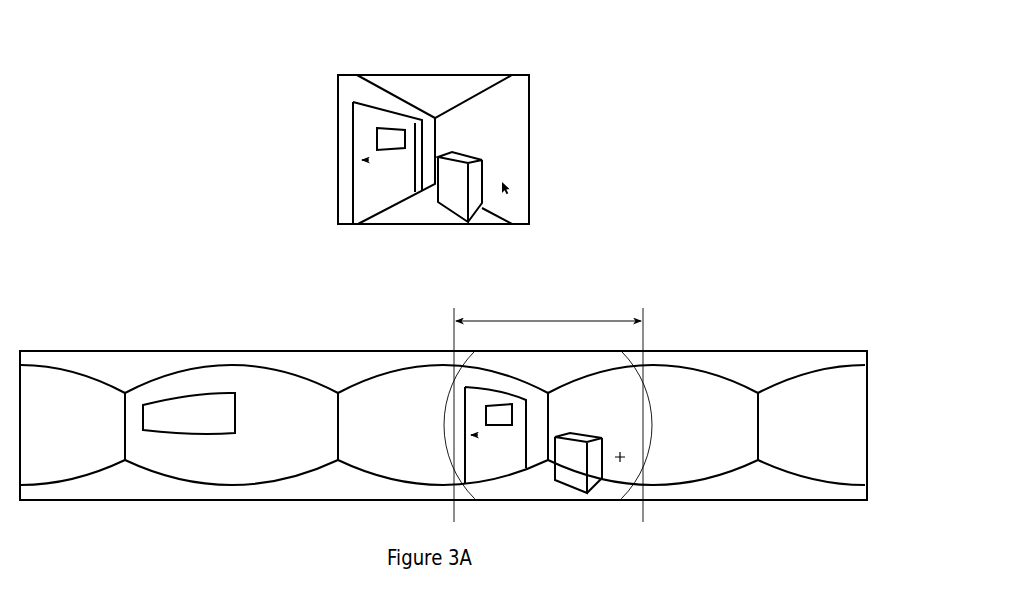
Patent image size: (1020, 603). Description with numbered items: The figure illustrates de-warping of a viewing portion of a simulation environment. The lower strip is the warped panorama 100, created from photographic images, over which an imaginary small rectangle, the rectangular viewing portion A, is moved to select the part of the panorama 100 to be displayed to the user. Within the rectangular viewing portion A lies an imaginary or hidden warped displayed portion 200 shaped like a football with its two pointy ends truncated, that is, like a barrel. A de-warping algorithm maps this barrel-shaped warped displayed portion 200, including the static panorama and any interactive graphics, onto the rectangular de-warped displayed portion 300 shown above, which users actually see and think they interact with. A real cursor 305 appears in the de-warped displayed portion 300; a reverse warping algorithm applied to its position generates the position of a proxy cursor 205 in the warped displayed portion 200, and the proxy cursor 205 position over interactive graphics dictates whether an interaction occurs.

The panorama 100 is at (238, 348).
The warped displayed portion 200 is at (613, 353).
The proxy cursor 205 is at (631, 457).
The de-warped displayed portion 300 is at (534, 122).
The real cursor 305 is at (513, 181).
The rectangular viewing portion A is at (578, 317).